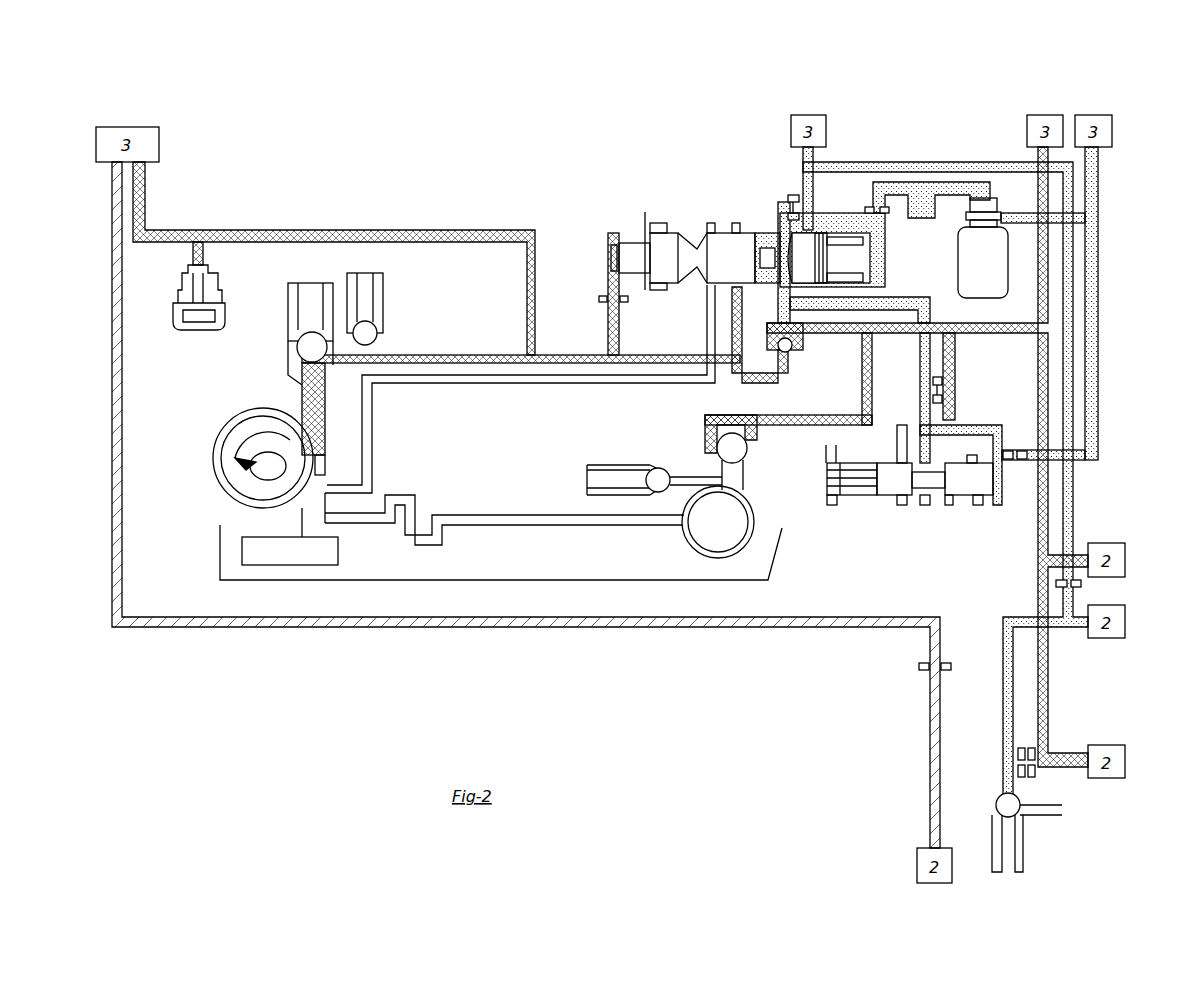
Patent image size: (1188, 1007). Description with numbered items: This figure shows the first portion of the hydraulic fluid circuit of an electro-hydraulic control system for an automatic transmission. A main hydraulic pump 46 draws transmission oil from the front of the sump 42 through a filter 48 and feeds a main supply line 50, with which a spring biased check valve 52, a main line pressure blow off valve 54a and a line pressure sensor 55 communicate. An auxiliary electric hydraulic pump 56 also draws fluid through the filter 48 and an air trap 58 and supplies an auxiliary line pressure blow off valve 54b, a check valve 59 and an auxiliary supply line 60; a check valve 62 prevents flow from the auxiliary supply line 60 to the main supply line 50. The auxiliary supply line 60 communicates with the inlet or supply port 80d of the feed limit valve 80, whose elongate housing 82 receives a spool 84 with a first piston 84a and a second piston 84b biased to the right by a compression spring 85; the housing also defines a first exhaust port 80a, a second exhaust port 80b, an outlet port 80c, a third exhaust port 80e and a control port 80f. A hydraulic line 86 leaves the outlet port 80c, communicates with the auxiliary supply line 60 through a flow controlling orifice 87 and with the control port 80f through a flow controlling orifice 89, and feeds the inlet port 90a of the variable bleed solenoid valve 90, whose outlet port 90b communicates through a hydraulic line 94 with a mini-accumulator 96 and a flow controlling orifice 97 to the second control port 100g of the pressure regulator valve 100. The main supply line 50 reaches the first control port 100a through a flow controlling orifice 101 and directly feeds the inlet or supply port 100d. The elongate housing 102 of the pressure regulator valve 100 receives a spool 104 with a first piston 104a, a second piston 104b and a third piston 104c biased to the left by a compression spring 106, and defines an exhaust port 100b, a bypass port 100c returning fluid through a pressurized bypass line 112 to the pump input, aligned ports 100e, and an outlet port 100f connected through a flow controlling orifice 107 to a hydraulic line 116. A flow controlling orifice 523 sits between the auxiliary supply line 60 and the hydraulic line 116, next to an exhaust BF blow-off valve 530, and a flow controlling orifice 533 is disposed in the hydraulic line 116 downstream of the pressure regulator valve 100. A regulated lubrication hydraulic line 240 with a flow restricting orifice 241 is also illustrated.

The regulated lubrication hydraulic line 240 is at (112, 180).
The flow restricting orifice 241 is at (930, 672).
The main supply line 50 is at (148, 182).
The line pressure sensor 55 is at (180, 330).
The spring biased check valve 52 is at (296, 312).
The main line pressure blow off valve 54a is at (372, 306).
The auxiliary line pressure blow off valve 54b is at (618, 470).
The main hydraulic pump 46 is at (240, 440).
The filter 48 is at (340, 552).
The sump 42 is at (220, 545).
The pressurized bypass line 112 is at (548, 383).
The air trap 58 is at (418, 502).
The auxiliary electric hydraulic pump 56 is at (700, 535).
The check valve 59 is at (716, 448).
The pressure regulator valve 100 is at (600, 243).
The first control port 100a is at (608, 282).
The exhaust port 100b is at (658, 225).
The bypass port 100c is at (710, 293).
The inlet or supply port 100d is at (738, 293).
The aligned ports 100e is at (787, 290).
The outlet port 100f is at (803, 232).
The second control port 100g is at (868, 208).
The flow controlling orifice 101 is at (608, 308).
The elongate housing 102 is at (695, 232).
The spool 104 is at (850, 260).
The first piston 104a is at (668, 290).
The second piston 104b is at (725, 232).
The third piston 104c is at (797, 258).
The compression spring 106 is at (848, 240).
The flow controlling orifice 107 is at (790, 195).
The check valve 62 is at (790, 352).
The hydraulic line 116 is at (996, 162).
The hydraulic line 94 is at (932, 182).
The mini-accumulator 96 is at (920, 197).
The flow controlling orifice 97 is at (878, 207).
The variable bleed solenoid valve 90 is at (1048, 224).
The inlet port 90a is at (1002, 218).
The outlet port 90b is at (982, 198).
The hydraulic line 86 is at (1098, 162).
The flow controlling orifice 89 is at (1027, 455).
The auxiliary supply line 60 is at (872, 355).
The flow controlling orifice 87 is at (942, 381).
The feed limit valve 80 is at (920, 545).
The first exhaust port 80a is at (826, 458).
The second exhaust port 80b is at (897, 458).
The outlet port 80c is at (925, 460).
The inlet or supply port 80d is at (948, 460).
The third exhaust port 80e is at (975, 505).
The control port 80f is at (985, 445).
The elongate housing 82 is at (828, 496).
The spool 84 is at (835, 476).
The first piston 84a is at (882, 498).
The second piston 84b is at (962, 498).
The compression spring 85 is at (858, 505).
The flow controlling orifice 533 is at (1062, 592).
The flow controlling orifice 523 is at (1018, 755).
The exhaust BF blow-off valve 530 is at (996, 805).